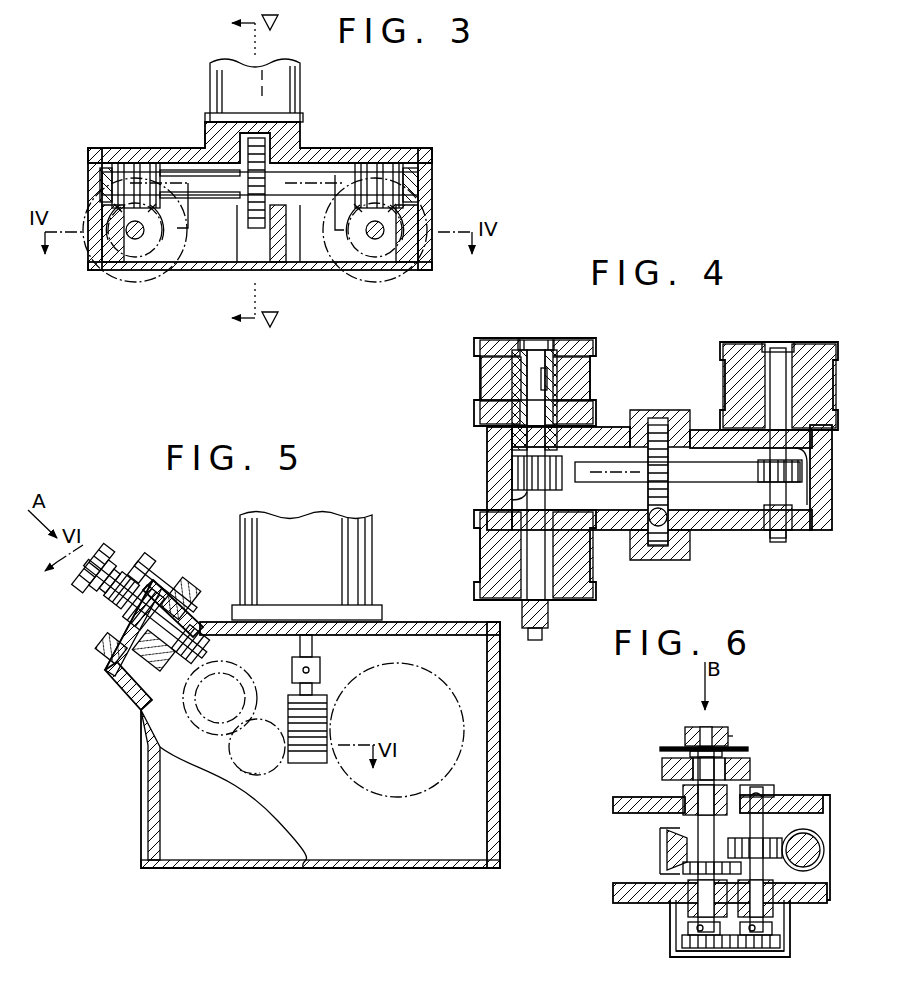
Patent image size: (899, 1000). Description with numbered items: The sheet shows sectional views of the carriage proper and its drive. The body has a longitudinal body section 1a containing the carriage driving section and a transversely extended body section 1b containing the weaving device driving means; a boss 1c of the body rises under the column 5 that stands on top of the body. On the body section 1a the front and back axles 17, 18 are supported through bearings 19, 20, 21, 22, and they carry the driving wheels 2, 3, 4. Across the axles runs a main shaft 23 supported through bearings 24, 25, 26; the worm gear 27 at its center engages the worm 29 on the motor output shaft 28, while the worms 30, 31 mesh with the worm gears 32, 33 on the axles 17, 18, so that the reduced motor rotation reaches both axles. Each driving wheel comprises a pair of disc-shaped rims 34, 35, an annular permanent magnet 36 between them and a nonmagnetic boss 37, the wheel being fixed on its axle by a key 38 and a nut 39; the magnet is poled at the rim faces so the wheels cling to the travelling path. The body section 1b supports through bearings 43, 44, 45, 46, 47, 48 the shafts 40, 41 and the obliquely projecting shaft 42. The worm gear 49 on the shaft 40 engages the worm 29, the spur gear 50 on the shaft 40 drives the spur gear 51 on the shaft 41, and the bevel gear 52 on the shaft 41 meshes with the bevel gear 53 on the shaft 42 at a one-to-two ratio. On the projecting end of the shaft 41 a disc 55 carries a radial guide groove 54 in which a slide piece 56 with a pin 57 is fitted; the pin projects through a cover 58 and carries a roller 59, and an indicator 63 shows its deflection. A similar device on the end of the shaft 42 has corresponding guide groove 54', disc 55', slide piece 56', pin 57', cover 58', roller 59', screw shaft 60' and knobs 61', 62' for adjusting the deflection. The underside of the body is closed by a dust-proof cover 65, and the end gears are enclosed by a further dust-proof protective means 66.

In FIG. 3, the body section 1a is at (433, 150).
In FIG. 4, the body section 1a is at (823, 513).
In FIG. 4, the body section 1b is at (687, 535).
In FIG. 5, the body section 1b is at (410, 626).
In FIG. 3, the housing boss 1c is at (208, 134).
In FIG. 3, the driving wheel 2 is at (83, 203).
In FIG. 4, the driving wheel 2 is at (508, 326).
In FIG. 4, the driving wheel 3 is at (478, 588).
In FIG. 3, the driving wheel 4 is at (441, 218).
In FIG. 4, the driving wheel 4 is at (836, 360).
In FIG. 3, the column 5 is at (293, 75).
In FIG. 5, the column 5 is at (323, 530).
In FIG. 3, the front axle 17 is at (135, 238).
In FIG. 4, the front axle 17 is at (548, 623).
In FIG. 3, the back axle 18 is at (373, 236).
In FIG. 4, the back axle 18 is at (788, 367).
In FIG. 4, the bearing 19 is at (505, 451).
In FIG. 4, the bearing 20 is at (504, 487).
In FIG. 4, the bearing 21 is at (815, 458).
In FIG. 4, the bearing 22 is at (792, 520).
In FIG. 3, the main shaft 23 is at (288, 188).
In FIG. 4, the main shaft 23 is at (632, 460).
In FIG. 3, the bearing 24 is at (108, 166).
In FIG. 3, the bearing 25 is at (285, 168).
In FIG. 3, the bearing 26 is at (411, 172).
In FIG. 3, the worm gear 27 is at (247, 232).
In FIG. 4, the worm gear 27 is at (666, 428).
In FIG. 5, the worm gear 27 is at (453, 757).
In FIG. 5, the motor output shaft 28 is at (312, 655).
In FIG. 4, the worm 29 is at (658, 537).
In FIG. 5, the worm 29 is at (310, 765).
In FIG. 6, the worm 29 is at (820, 827).
In FIG. 3, the worm 30 is at (140, 164).
In FIG. 3, the worm 31 is at (385, 164).
In FIG. 3, the worm gear 32 is at (160, 258).
In FIG. 4, the worm gear 32 is at (512, 466).
In FIG. 3, the worm gear 33 is at (400, 236).
In FIG. 4, the worm gear 33 is at (802, 472).
In FIG. 4, the disc-shaped rim 34 is at (475, 351).
In FIG. 4, the disc-shaped rim 35 is at (477, 413).
In FIG. 4, the annular permanent magnet 36 is at (480, 377).
In FIG. 4, the boss 37 is at (553, 348).
In FIG. 4, the key 38 is at (575, 383).
In FIG. 4, the nut 39 is at (530, 337).
In FIG. 6, the shaft 40 is at (827, 862).
In FIG. 6, the shaft 41 is at (682, 932).
In FIG. 5, the shaft 42 is at (138, 658).
In FIG. 6, the shaft 42 is at (665, 853).
In FIG. 6, the bearing 43 is at (775, 792).
In FIG. 6, the bearing 44 is at (770, 896).
In FIG. 6, the bearing 45 is at (667, 838).
In FIG. 6, the bearing 46 is at (680, 897).
In FIG. 5, the bearing 47 is at (142, 683).
In FIG. 5, the bearing 48 is at (150, 748).
In FIG. 5, the worm gear 49 is at (257, 777).
In FIG. 6, the worm gear 49 is at (780, 810).
In FIG. 6, the spur gear 50 is at (790, 945).
In FIG. 6, the spur gear 51 is at (680, 957).
In FIG. 5, the bevel gear 52 is at (232, 778).
In FIG. 6, the bevel gear 52 is at (657, 871).
In FIG. 5, the bevel gear 53 is at (197, 730).
In FIG. 6, the bevel gear 53 is at (660, 865).
In FIG. 6, the guide groove 54 is at (739, 831).
In FIG. 6, the disc 55 is at (687, 770).
In FIG. 6, the slide piece 56 is at (686, 750).
In FIG. 6, the pin 57 is at (712, 713).
In FIG. 6, the cover 58 is at (672, 745).
In FIG. 6, the roller 59 is at (743, 721).
In FIG. 6, the indicator 63 is at (693, 751).
In FIG. 5, the dust-proof cover 65 is at (415, 868).
In FIG. 6, the dust-proof protective means 66 is at (773, 953).
In FIG. 5, the guide groove 54' is at (80, 659).
In FIG. 5, the disc 55' is at (191, 584).
In FIG. 5, the slide piece 56' is at (105, 649).
In FIG. 5, the pin 57' is at (88, 548).
In FIG. 5, the cover 58' is at (65, 578).
In FIG. 5, the roller 59' is at (106, 552).
In FIG. 5, the screw shaft 60' is at (126, 565).
In FIG. 5, the knob 61' is at (175, 573).
In FIG. 5, the knob 62' is at (94, 620).